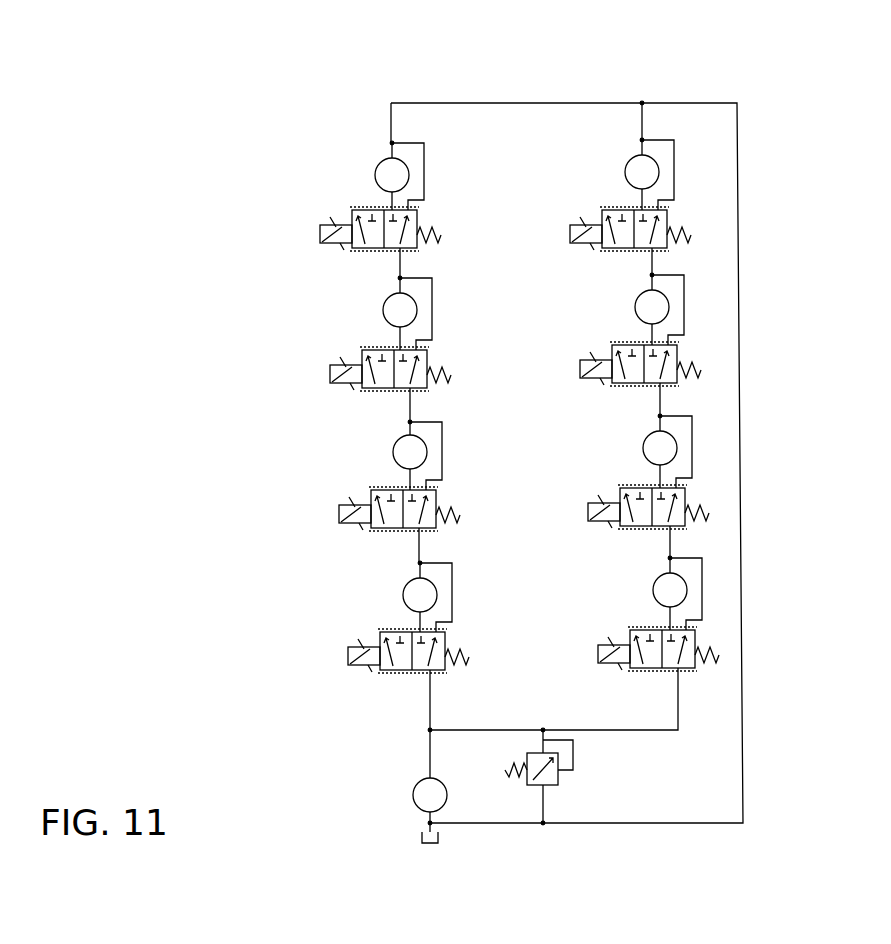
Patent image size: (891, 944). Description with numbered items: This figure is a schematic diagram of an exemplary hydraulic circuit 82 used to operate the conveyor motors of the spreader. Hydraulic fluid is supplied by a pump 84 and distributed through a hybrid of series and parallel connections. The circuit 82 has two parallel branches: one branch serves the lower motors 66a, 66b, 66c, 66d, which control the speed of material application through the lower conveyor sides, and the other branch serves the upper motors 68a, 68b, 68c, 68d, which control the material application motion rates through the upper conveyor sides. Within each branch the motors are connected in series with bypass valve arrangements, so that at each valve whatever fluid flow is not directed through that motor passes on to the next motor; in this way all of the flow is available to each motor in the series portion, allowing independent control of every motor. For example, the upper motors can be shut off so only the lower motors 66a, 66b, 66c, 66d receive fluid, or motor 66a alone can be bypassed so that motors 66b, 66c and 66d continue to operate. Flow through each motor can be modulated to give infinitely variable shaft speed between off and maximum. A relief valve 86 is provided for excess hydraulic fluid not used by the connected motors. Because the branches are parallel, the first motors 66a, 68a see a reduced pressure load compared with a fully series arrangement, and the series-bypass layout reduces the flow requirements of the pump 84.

The hydraulic circuit 82 is at (733, 58).
The motor 66a is at (345, 661).
The motor 66b is at (331, 519).
The motor 66c is at (322, 384).
The motor 66d is at (313, 242).
The motor 68a is at (697, 640).
The motor 68b is at (687, 498).
The motor 68c is at (677, 355).
The motor 68d is at (667, 218).
The pump 84 is at (417, 805).
The relief valve 86 is at (552, 786).